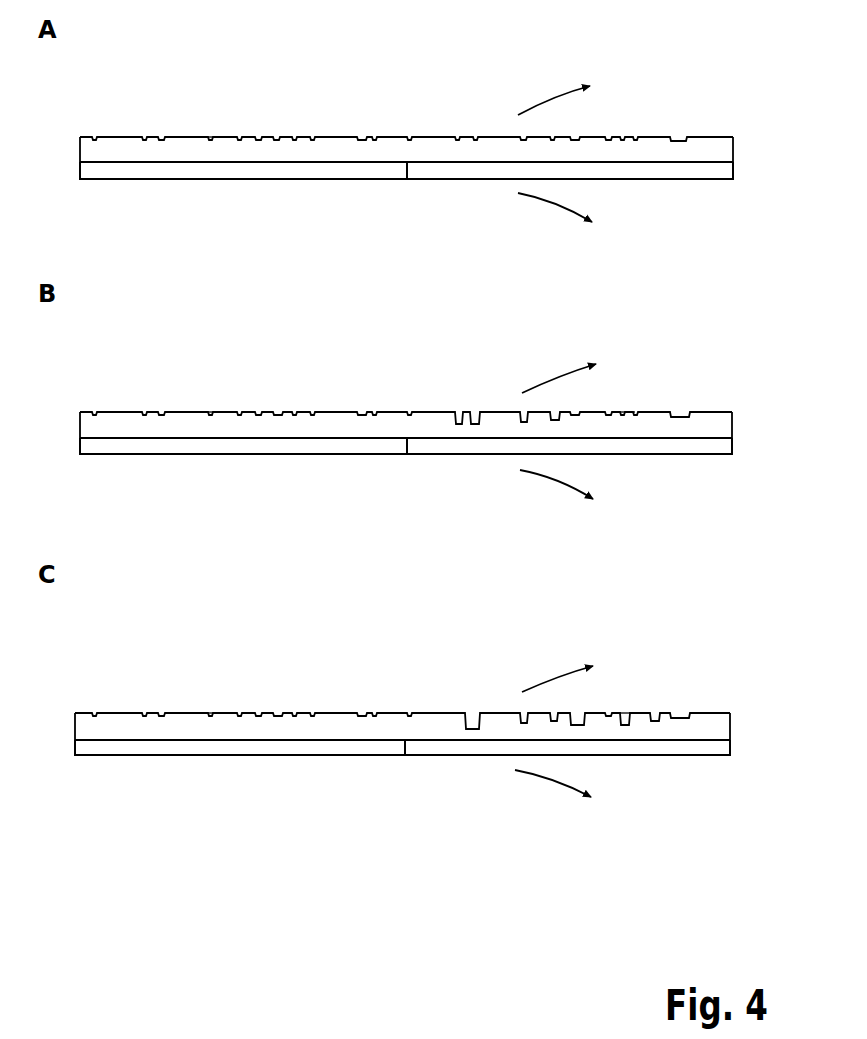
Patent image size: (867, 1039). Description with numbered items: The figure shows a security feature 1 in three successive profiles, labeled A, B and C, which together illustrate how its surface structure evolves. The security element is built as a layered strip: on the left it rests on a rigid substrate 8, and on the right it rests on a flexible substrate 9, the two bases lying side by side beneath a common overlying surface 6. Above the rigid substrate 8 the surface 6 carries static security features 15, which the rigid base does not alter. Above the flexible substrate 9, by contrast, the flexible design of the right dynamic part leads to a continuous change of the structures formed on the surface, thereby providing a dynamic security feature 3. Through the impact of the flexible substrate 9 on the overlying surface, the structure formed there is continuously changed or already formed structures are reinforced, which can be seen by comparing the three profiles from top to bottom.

The security feature 1 is at (703, 150).
The dynamic security feature 3 is at (592, 142).
The surface 6 is at (338, 135).
The rigid substrate 8 is at (220, 173).
The flexible substrate 9 is at (673, 165).
The static security features 15 is at (210, 135).